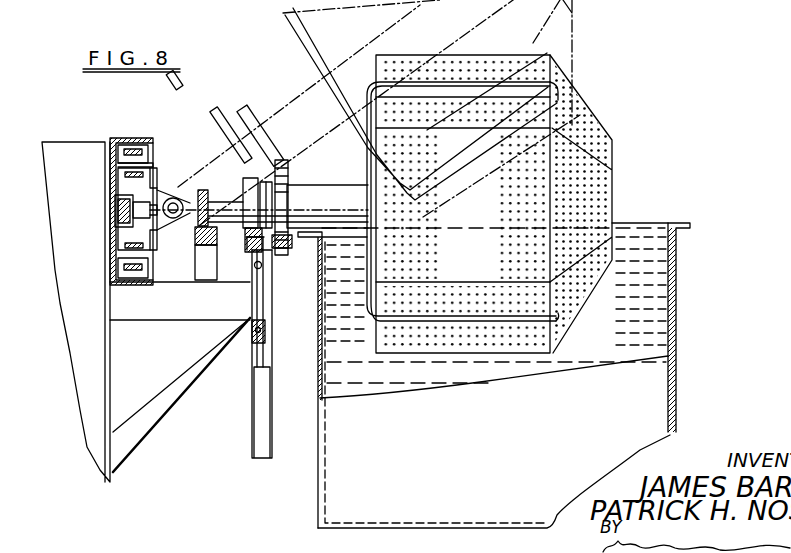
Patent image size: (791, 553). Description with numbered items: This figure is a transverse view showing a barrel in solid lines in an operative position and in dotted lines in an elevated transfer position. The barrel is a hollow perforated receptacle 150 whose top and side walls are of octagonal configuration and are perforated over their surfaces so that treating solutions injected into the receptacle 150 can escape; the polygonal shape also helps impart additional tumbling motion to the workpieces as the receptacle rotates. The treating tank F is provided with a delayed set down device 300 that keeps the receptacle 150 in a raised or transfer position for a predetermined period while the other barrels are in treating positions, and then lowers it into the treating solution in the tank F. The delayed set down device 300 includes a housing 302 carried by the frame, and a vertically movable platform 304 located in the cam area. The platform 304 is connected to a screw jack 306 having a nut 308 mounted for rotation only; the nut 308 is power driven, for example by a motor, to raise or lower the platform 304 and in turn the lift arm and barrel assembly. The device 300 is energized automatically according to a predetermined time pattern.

The receptacle 150 is at (573, 50).
The delayed set down device 300 is at (287, 303).
The housing 302 is at (252, 405).
The vertically movable platform 304 is at (227, 135).
The screw jack 306 is at (258, 300).
The nut 308 is at (265, 340).
The treating tank F is at (677, 305).